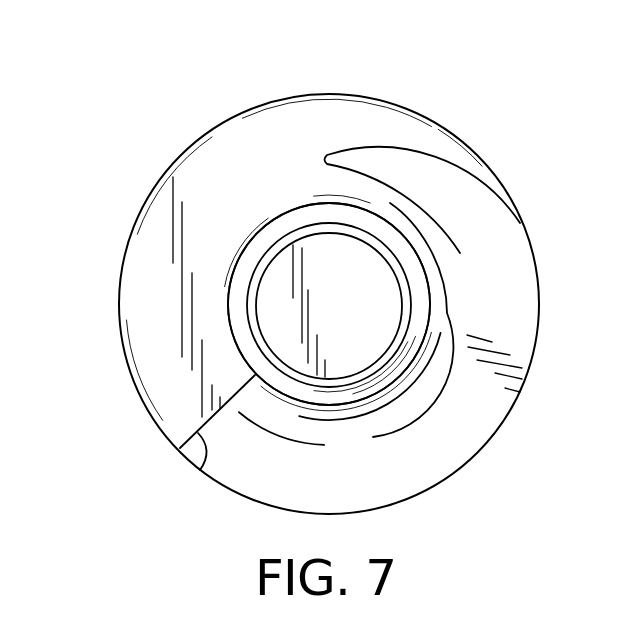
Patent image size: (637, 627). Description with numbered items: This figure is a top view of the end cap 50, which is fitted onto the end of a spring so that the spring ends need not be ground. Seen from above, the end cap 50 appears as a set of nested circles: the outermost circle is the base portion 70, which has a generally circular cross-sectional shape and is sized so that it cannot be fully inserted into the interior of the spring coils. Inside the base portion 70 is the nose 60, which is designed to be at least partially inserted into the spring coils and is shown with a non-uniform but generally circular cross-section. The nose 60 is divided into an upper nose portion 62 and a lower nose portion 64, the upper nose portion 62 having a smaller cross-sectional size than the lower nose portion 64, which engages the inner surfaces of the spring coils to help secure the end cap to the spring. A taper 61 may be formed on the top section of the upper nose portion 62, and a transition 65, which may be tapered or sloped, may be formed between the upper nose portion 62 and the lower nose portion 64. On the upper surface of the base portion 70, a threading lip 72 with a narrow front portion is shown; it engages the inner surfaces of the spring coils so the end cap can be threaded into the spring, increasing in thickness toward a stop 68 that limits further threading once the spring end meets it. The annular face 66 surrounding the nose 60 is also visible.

The end cap 50 is at (166, 105).
The nose 60 is at (400, 296).
The taper 61 is at (256, 312).
The upper nose portion 62 is at (305, 223).
The lower nose portion 64 is at (235, 258).
The transition 65 is at (232, 290).
The annular body face 66 is at (228, 158).
The stop 68 is at (200, 470).
The base portion 70 is at (490, 437).
The threading lip 72 is at (378, 182).